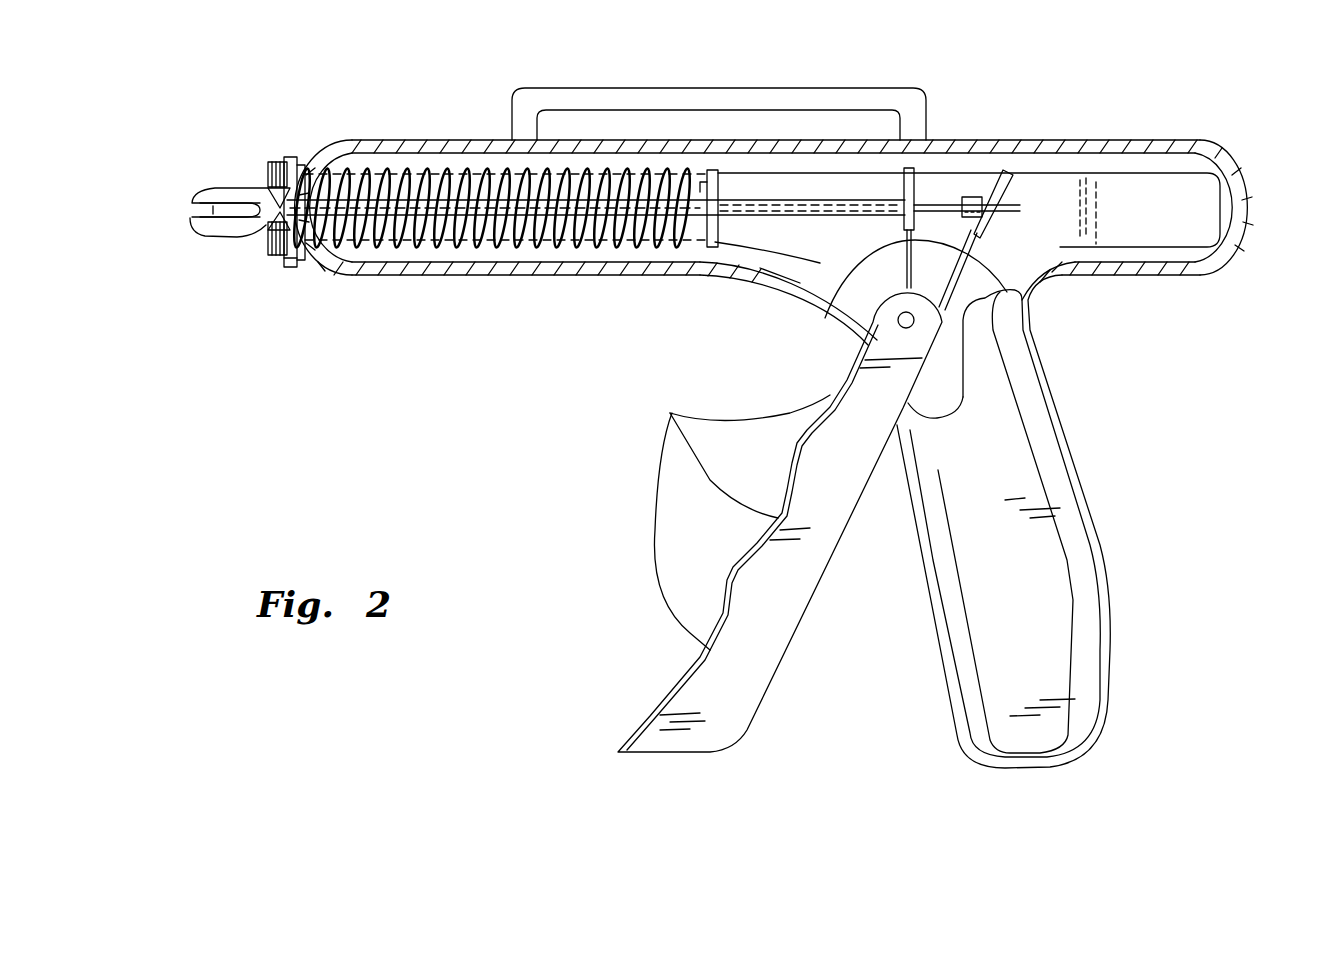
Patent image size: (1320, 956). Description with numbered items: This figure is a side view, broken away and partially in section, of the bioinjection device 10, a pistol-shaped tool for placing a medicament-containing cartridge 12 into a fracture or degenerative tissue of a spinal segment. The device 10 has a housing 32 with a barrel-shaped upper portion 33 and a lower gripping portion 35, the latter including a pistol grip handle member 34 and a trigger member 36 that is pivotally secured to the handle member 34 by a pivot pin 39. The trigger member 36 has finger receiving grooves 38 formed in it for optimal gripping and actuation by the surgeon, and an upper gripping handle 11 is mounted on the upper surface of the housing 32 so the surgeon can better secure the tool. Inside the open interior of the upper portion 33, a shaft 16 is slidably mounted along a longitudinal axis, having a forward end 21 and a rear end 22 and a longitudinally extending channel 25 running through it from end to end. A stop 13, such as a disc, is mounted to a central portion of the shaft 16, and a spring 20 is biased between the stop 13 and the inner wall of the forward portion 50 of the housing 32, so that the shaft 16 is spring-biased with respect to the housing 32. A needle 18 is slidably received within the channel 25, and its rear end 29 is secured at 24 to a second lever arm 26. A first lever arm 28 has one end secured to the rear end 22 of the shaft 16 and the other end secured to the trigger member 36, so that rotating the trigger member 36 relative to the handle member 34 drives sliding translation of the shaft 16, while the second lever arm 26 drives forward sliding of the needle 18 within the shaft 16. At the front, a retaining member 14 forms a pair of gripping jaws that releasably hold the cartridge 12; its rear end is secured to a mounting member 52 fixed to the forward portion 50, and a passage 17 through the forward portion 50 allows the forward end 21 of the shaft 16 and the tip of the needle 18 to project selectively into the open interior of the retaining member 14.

The bioinjection device 10 is at (1153, 69).
The upper gripping handle 11 is at (522, 105).
The cartridge 12 is at (200, 210).
The stop 13 is at (708, 248).
The retaining member 14 is at (202, 188).
The shaft 16 is at (322, 268).
The passage 17 is at (263, 184).
The needle 18 is at (266, 228).
The spring 20 is at (472, 170).
The forward end of shaft 21 is at (272, 262).
The rear end of shaft 22 is at (897, 190).
The securement of needle rear end 24 is at (980, 197).
The channel 25 is at (797, 292).
The second lever arm 26 is at (1020, 175).
The first lever arm 28 is at (916, 188).
The rear end of needle 29 is at (1020, 207).
The housing 32 is at (1205, 140).
The barrel-shaped upper portion 33 is at (578, 288).
The pistol grip handle member 34 is at (1058, 485).
The lower gripping portion 35 is at (1184, 594).
The trigger member 36 is at (770, 632).
The finger receiving grooves 38 is at (734, 522).
The pivot pin 39 is at (897, 320).
The forward portion of housing 50 is at (330, 148).
The mounting member 52 is at (296, 156).